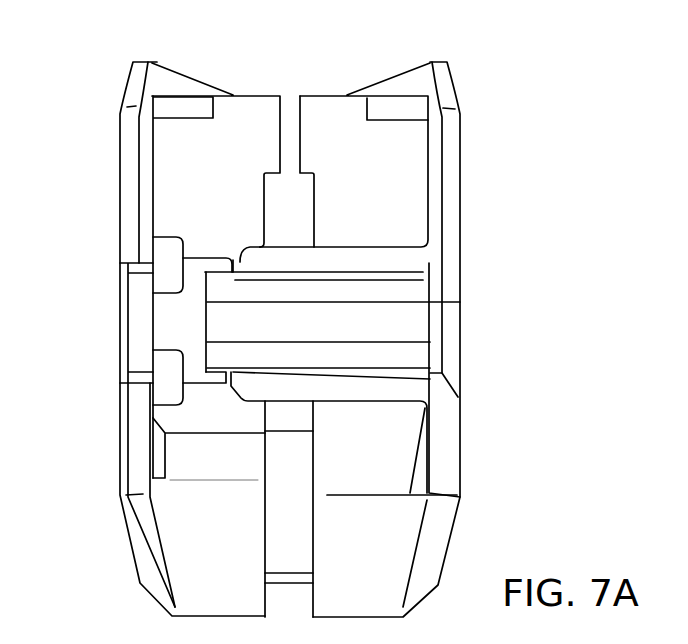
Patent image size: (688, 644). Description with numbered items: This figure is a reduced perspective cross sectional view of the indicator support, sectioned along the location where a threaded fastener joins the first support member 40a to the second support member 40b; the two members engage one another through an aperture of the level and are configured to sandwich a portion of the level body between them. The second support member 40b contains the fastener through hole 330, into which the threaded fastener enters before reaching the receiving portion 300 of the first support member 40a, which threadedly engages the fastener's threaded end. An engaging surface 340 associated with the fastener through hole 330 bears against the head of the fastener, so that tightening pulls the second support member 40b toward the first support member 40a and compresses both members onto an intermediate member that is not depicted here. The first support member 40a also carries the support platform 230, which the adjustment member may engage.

The first support member 40a is at (472, 83).
The second support member 40b is at (102, 89).
The support platform 230 is at (283, 432).
The receiving portion 300 is at (253, 313).
The fastener through hole 330 is at (139, 306).
The engaging surface 340 is at (130, 274).